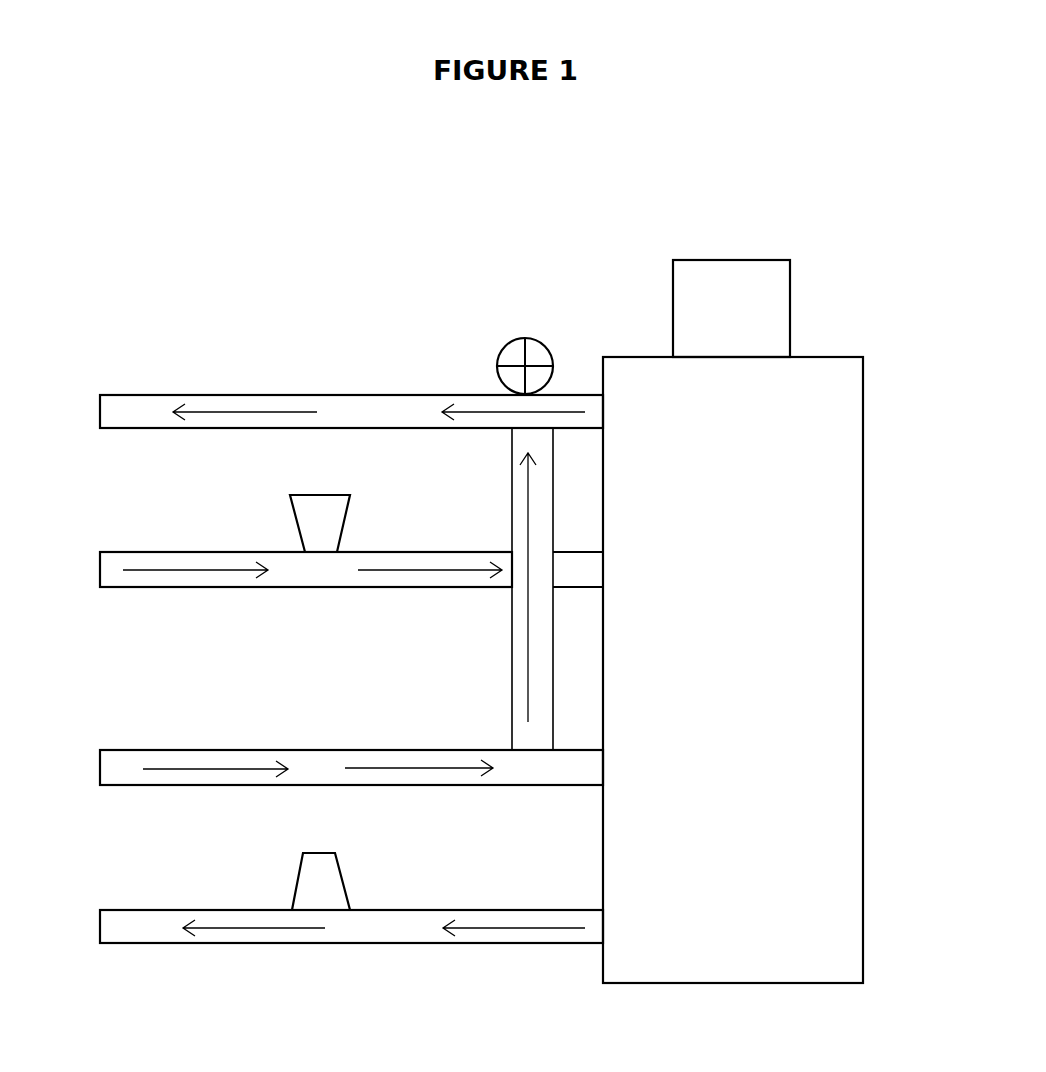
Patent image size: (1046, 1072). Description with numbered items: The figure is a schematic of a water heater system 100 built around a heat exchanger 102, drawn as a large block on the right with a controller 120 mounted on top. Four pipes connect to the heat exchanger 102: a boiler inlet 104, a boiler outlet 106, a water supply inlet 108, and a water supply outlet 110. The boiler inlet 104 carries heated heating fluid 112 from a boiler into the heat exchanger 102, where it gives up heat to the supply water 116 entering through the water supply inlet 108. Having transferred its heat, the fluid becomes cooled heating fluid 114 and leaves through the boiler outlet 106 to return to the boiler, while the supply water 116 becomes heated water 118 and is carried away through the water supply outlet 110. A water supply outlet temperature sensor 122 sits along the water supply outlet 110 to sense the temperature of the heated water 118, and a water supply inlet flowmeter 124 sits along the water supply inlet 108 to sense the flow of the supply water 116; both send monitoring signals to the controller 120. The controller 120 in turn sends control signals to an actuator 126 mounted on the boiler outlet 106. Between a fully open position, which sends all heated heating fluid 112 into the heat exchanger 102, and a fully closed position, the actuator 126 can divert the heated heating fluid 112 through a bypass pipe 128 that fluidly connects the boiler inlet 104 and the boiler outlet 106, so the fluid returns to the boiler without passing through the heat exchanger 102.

The water heater system 100 is at (370, 228).
The heat exchanger 102 is at (863, 365).
The boiler inlet 104 is at (172, 750).
The boiler outlet 106 is at (160, 395).
The water supply inlet 108 is at (150, 552).
The water supply outlet 110 is at (138, 910).
The heated heating fluid 112 is at (182, 770).
The cooled heating fluid 114 is at (207, 412).
The supply water 116 is at (150, 570).
The heated water 118 is at (228, 928).
The controller 120 is at (735, 260).
The water supply outlet temperature sensor 122 is at (343, 888).
The water supply inlet flowmeter 124 is at (347, 520).
The actuator 126 is at (513, 340).
The bypass pipe 128 is at (512, 660).